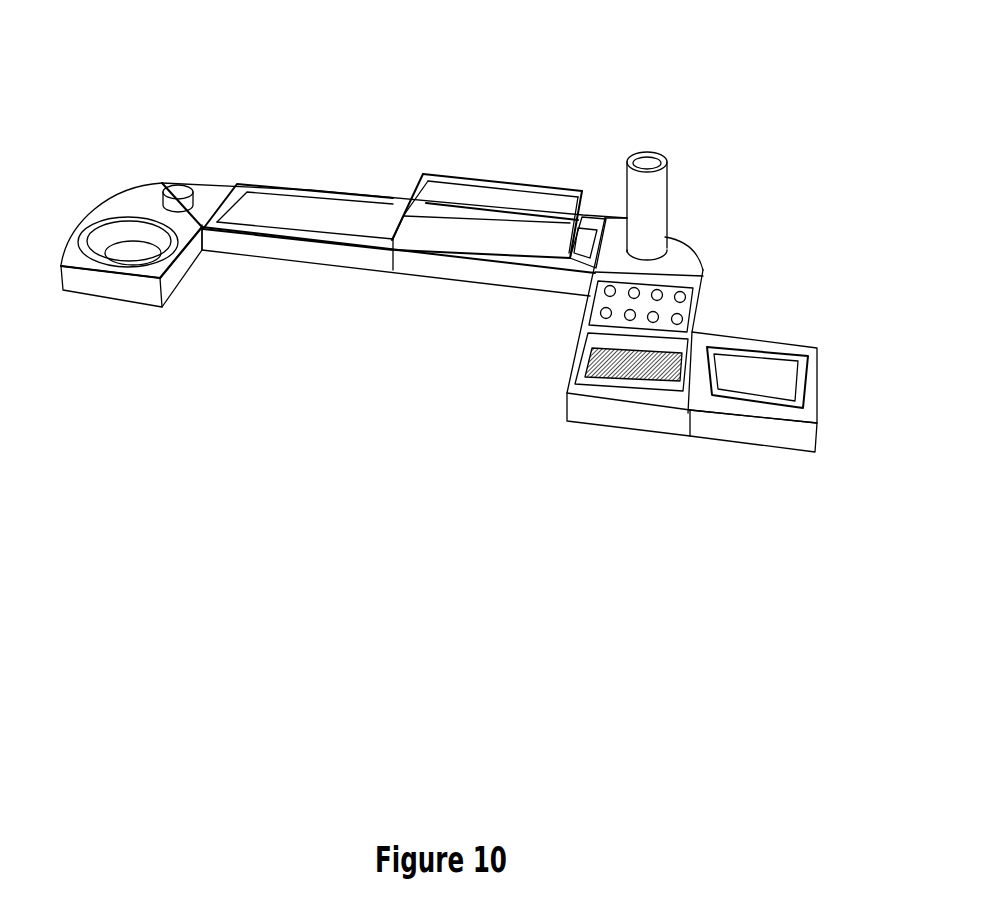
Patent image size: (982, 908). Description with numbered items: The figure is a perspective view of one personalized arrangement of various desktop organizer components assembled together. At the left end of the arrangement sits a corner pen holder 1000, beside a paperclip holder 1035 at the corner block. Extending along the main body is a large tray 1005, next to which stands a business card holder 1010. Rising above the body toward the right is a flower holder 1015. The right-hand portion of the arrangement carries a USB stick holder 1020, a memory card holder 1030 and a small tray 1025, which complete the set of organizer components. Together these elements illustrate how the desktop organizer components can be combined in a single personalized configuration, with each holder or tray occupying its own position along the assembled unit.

The corner pen holder 1000 is at (177, 172).
The large tray 1005 is at (317, 178).
The business card holder 1010 is at (489, 171).
The flower holder 1015 is at (682, 148).
The USB stick holder 1020 is at (722, 306).
The small tray 1025 is at (738, 455).
The memory card holder 1030 is at (638, 438).
The paperclip holder 1035 is at (125, 312).